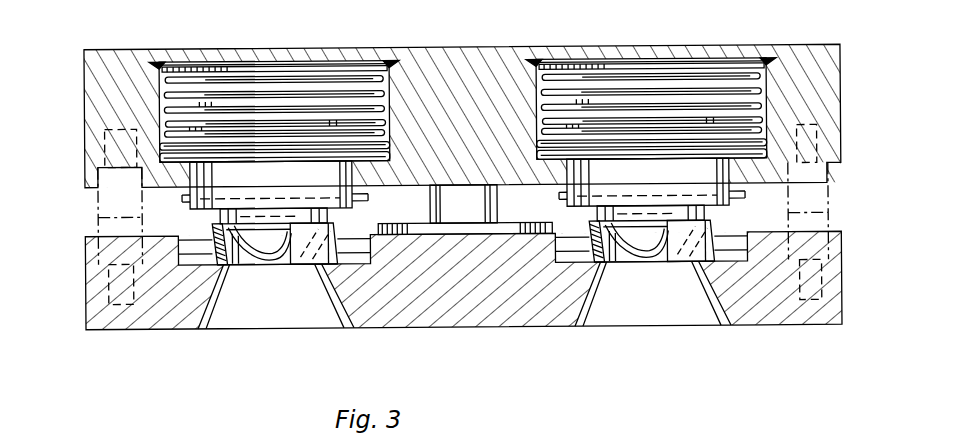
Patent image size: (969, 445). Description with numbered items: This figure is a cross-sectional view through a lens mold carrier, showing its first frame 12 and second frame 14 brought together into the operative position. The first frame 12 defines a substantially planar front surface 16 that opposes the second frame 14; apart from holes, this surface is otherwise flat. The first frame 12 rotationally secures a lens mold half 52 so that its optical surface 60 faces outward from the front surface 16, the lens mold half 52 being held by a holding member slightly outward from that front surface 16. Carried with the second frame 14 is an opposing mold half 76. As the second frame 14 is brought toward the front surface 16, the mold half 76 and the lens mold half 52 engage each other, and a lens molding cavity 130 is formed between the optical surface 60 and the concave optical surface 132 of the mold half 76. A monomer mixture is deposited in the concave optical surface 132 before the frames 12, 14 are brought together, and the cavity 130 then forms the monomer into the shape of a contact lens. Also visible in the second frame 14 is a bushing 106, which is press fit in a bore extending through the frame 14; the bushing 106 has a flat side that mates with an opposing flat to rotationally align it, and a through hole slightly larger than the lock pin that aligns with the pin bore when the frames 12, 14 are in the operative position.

The first frame 12 is at (841, 151).
The second frame 14 is at (841, 285).
The front surface 16 is at (93, 184).
The lens mold half 52 is at (700, 206).
The optical surface 60 is at (628, 244).
The mold half 76 is at (592, 231).
The bushing 106 is at (404, 222).
The lens molding cavity 130 is at (258, 248).
The optical surface 132 is at (630, 249).